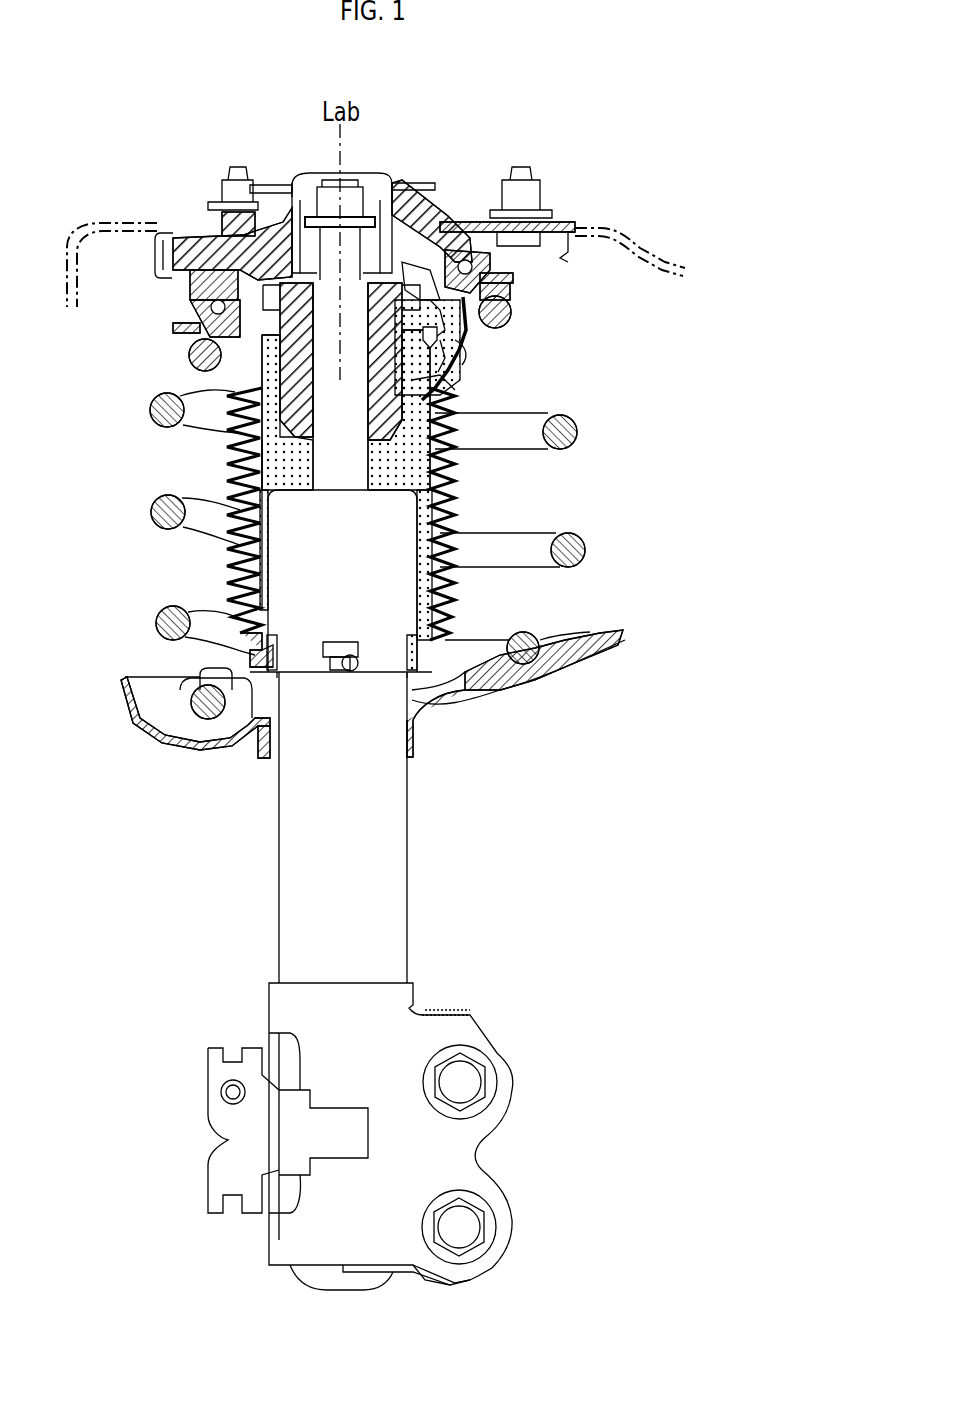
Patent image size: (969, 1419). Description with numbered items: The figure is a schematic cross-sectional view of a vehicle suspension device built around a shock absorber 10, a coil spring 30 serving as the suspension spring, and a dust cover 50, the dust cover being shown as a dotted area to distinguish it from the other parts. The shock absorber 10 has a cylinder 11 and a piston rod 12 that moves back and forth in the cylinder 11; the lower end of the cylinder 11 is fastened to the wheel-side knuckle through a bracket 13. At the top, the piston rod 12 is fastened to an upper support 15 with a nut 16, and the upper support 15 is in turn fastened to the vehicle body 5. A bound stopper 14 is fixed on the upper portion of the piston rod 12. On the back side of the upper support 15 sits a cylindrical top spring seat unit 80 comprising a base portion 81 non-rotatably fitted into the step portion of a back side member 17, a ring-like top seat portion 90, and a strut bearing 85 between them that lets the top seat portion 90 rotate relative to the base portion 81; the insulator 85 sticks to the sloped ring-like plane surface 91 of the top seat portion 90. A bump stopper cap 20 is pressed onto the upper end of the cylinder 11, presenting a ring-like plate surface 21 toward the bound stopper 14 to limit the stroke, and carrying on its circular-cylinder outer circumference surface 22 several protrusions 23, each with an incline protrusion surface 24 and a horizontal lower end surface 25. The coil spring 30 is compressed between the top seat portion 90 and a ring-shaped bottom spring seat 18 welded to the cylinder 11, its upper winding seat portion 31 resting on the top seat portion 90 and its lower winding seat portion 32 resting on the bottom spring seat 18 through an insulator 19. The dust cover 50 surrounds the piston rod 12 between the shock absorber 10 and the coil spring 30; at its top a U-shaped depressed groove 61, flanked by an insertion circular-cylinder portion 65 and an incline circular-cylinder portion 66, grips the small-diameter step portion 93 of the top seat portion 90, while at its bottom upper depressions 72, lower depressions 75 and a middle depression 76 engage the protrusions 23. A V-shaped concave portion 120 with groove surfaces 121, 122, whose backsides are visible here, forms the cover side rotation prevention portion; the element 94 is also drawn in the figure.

The vehicle body 5 is at (668, 262).
The shock absorber 10 is at (420, 790).
The cylinder 11 is at (407, 850).
The piston rod 12 is at (432, 478).
The bracket 13 is at (478, 1162).
The bound stopper 14 is at (440, 448).
The upper support 15 is at (418, 185).
The nut 16 is at (344, 190).
The back side member 17 is at (197, 224).
The bottom spring seat 18 is at (620, 645).
The insulator 19 is at (560, 665).
The bump stopper cap 20 is at (428, 520).
The ring-like plate surface 21 is at (262, 490).
The circular-cylinder outer circumference surface 22 is at (445, 558).
The protrusion 23 is at (337, 642).
The incline protrusion surface 24 is at (355, 655).
The lower end surface 25 is at (358, 668).
The coil spring 30 is at (580, 433).
The upper winding seat portion 31 is at (480, 325).
The lower winding seat portion 32 is at (535, 630).
The dust cover 50 is at (235, 458).
The depressed groove 61 is at (235, 388).
The insertion circular-cylinder portion 65 is at (435, 245).
The incline circular-cylinder portion 66 is at (495, 375).
The upper depression 72 is at (240, 628).
The lower depression 75 is at (255, 738).
The middle depression 76 is at (235, 672).
The top spring seat unit 80 is at (148, 322).
The base portion 81 is at (190, 288).
The strut bearing 85 is at (190, 357).
The top seat portion 90 is at (175, 343).
The ring-like plane surface 91 is at (512, 303).
The small-diameter step portion 93 is at (470, 343).
The seat wall 94 is at (455, 352).
The concave portion 120 is at (462, 250).
The groove surface 121 is at (460, 370).
The groove surface 122 is at (450, 380).